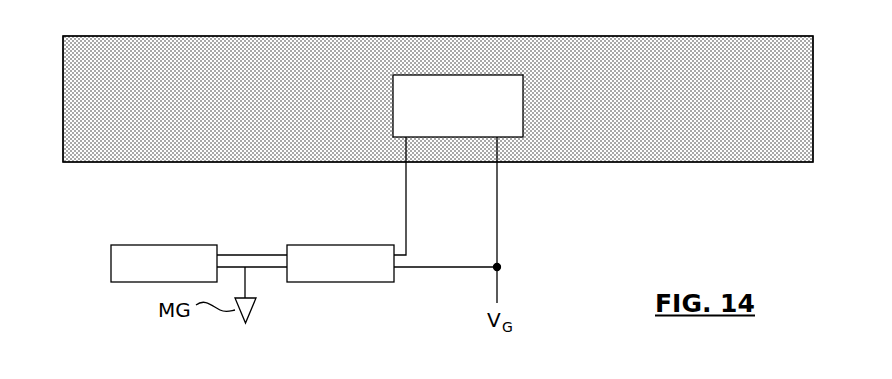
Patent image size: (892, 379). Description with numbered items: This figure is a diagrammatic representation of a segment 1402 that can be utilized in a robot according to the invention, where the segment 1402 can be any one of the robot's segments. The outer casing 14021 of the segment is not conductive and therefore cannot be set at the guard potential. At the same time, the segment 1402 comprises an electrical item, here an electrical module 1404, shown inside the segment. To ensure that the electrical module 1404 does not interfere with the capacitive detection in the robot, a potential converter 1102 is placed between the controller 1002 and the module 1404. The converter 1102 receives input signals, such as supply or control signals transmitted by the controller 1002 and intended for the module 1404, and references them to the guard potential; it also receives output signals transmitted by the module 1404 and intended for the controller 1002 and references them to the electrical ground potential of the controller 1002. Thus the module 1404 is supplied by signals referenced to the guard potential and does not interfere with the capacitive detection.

The segment 1402 is at (730, 108).
The outer casing 14021 is at (133, 162).
The electrical module 1404 is at (487, 101).
The controller 1002 is at (193, 271).
The converter 1102 is at (370, 271).